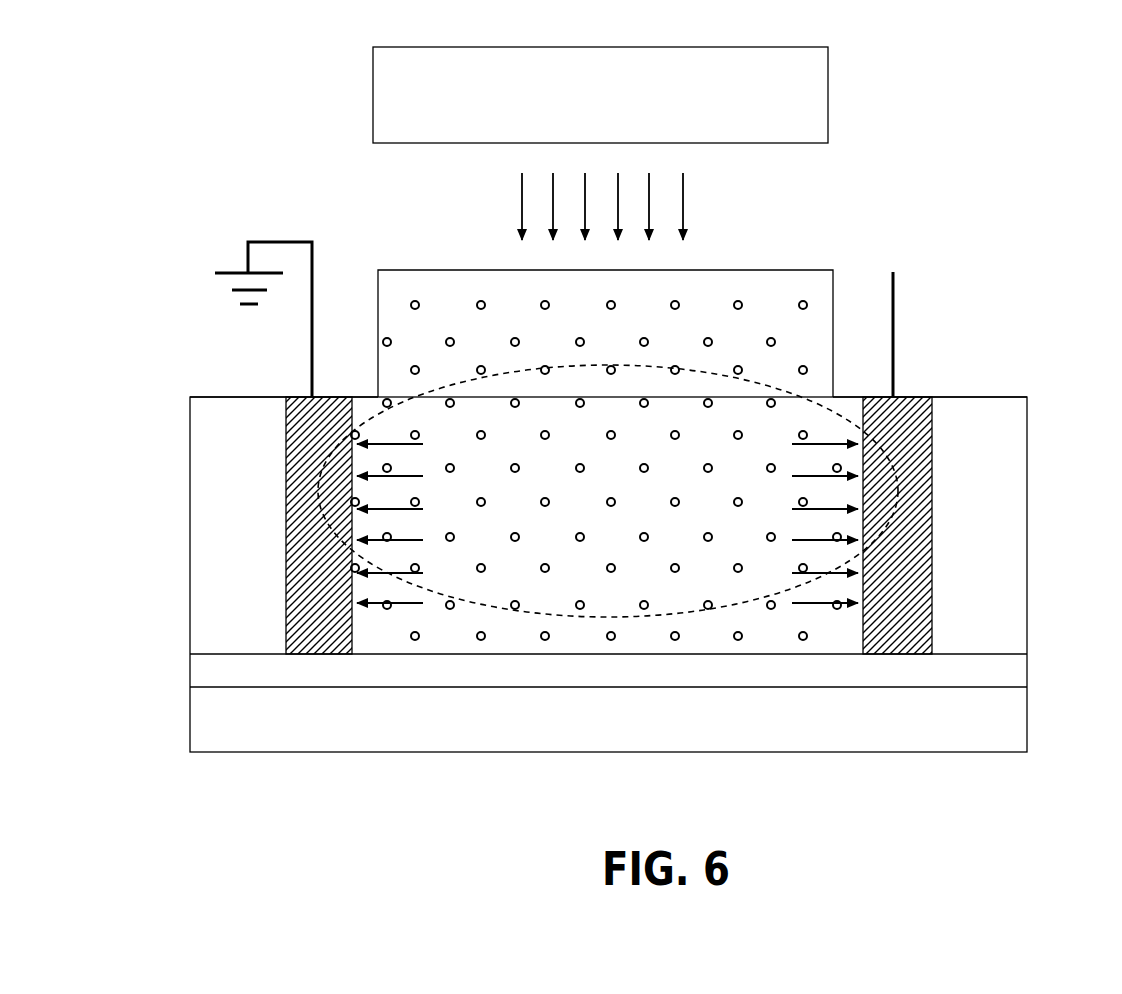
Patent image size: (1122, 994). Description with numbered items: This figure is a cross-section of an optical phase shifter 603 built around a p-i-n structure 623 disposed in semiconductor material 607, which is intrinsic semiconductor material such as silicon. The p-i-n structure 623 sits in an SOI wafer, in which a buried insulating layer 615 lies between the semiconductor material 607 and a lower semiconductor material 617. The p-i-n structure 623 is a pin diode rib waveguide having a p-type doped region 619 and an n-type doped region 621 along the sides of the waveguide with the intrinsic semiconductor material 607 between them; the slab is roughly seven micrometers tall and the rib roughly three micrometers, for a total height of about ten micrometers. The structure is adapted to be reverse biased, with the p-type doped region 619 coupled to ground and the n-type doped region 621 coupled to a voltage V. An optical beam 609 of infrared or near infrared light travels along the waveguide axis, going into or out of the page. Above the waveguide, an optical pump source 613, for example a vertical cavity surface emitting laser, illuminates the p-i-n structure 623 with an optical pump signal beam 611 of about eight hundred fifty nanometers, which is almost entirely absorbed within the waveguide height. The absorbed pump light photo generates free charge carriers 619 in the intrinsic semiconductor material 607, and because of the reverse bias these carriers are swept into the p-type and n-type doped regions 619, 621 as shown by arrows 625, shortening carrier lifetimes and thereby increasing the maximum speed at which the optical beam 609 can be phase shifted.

The optical phase shifter 603 is at (1069, 100).
The semiconductor material 607 is at (220, 622).
The optical beam 609 is at (400, 402).
The optical pump signal beam 611 is at (705, 203).
The optical pump source 613 is at (821, 89).
The buried insulating layer 615 is at (1025, 663).
The semiconductor material 617 is at (1025, 715).
The p-type doped region 619 is at (668, 310).
The n-type doped region 621 is at (890, 654).
The p-i-n structure 623 is at (838, 223).
The arrows 625 is at (400, 608).